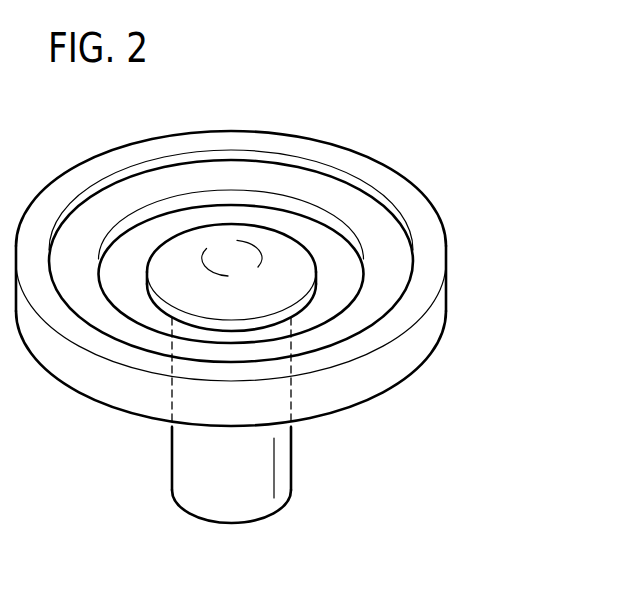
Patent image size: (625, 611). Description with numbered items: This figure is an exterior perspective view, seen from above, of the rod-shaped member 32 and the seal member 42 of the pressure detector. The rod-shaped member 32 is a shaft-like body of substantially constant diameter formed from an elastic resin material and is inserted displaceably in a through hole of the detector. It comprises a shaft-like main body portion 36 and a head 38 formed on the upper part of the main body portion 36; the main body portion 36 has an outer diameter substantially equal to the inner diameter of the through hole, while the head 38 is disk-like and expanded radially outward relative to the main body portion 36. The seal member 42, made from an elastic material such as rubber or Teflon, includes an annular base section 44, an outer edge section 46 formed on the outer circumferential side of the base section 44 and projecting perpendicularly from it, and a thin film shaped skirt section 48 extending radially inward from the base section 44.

The rod-shaped member 32 is at (230, 528).
The main body portion 36 is at (202, 488).
The head 38 is at (248, 238).
The seal member 42 is at (316, 133).
The annular base section 44 is at (377, 298).
The outer edge section 46 is at (83, 378).
The skirt section 48 is at (135, 250).